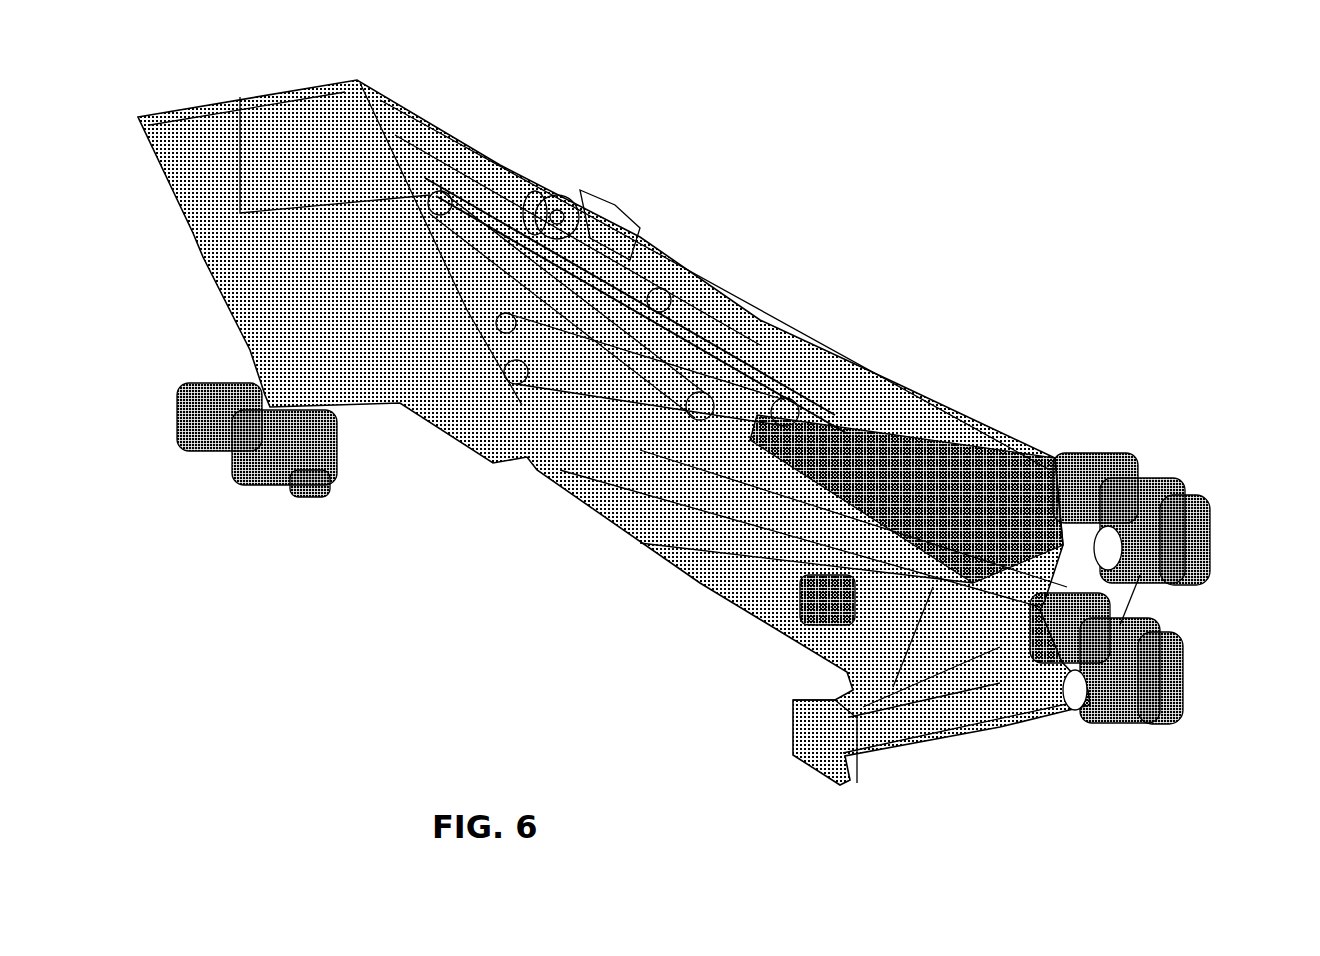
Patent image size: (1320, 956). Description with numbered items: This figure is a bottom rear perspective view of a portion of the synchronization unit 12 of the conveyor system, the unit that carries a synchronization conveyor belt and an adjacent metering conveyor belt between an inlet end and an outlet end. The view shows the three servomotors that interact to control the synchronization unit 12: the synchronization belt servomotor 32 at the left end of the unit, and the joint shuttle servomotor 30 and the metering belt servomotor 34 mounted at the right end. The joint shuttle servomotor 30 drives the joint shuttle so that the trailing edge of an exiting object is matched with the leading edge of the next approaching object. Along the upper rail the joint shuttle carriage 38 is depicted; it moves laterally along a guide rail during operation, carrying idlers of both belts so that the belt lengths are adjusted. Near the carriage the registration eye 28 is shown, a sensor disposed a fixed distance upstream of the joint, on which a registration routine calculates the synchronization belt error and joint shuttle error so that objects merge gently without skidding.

The synchronization unit 12 is at (933, 222).
The registration eye 28 is at (618, 198).
The joint shuttle servomotor 30 is at (1200, 497).
The synchronization belt servomotor 32 is at (232, 485).
The metering belt servomotor 34 is at (1190, 650).
The joint shuttle carriage 38 is at (503, 193).